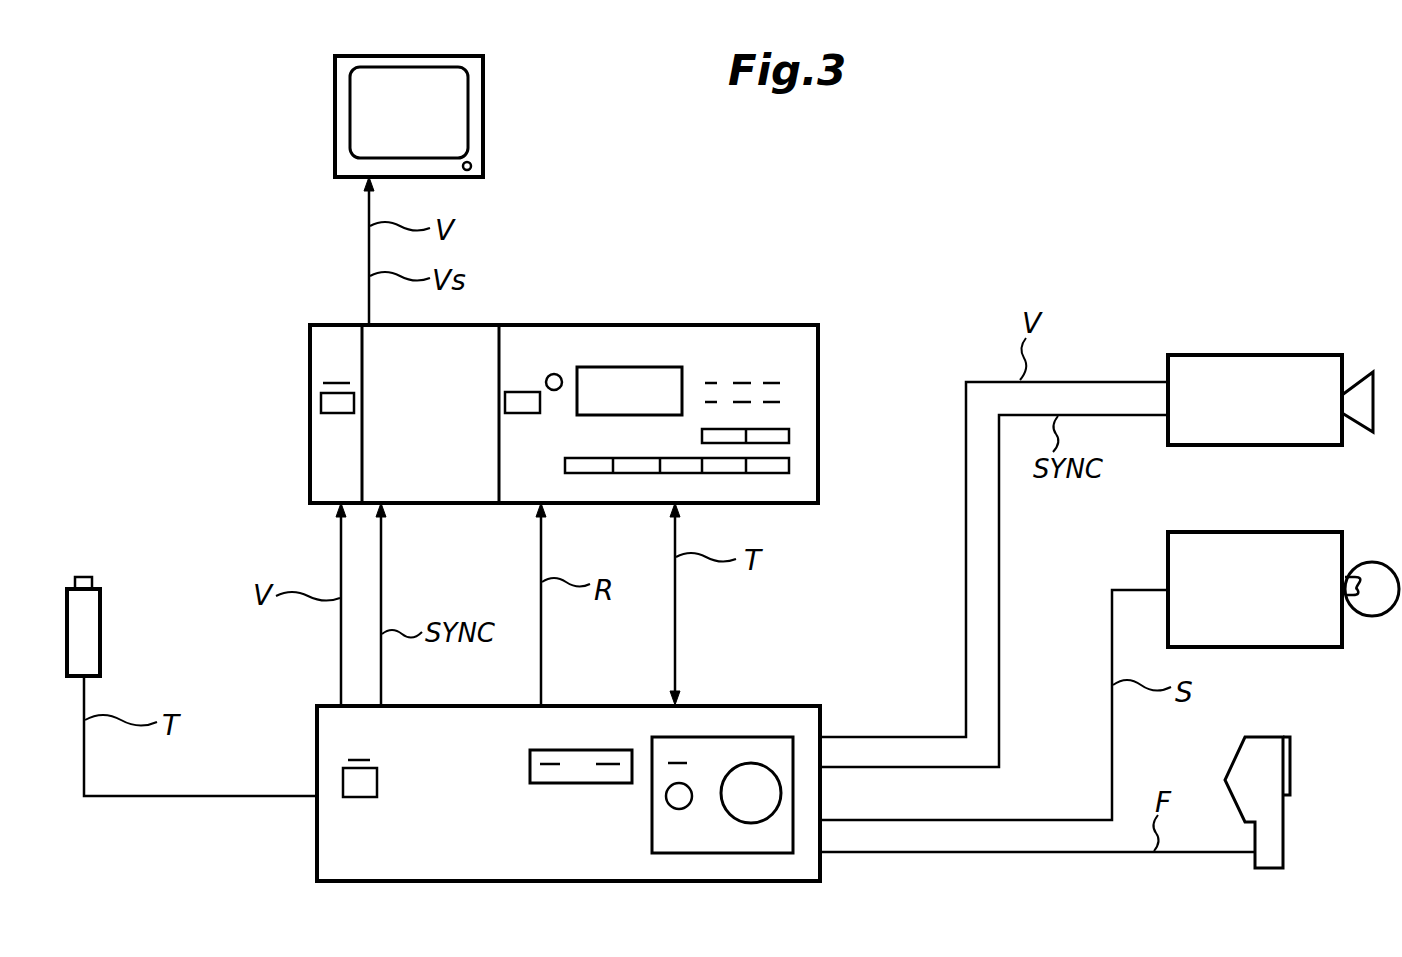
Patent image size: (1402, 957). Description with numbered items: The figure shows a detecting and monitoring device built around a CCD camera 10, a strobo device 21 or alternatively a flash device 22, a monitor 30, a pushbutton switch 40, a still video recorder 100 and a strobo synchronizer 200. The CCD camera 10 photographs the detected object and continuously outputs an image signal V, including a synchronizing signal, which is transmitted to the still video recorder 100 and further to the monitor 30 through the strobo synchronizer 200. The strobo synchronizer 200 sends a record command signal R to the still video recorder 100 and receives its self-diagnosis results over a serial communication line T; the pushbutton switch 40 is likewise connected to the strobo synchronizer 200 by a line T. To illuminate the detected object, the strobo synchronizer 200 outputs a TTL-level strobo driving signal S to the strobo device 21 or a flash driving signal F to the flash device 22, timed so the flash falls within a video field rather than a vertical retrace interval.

The CCD camera 10 is at (1245, 355).
The strobo device 21 is at (1246, 532).
The flash device 22 is at (1260, 737).
The monitor 30 is at (484, 108).
The pushbutton switch 40 is at (86, 577).
The still video recorder 100 is at (713, 325).
The strobo synchronizer 200 is at (568, 754).